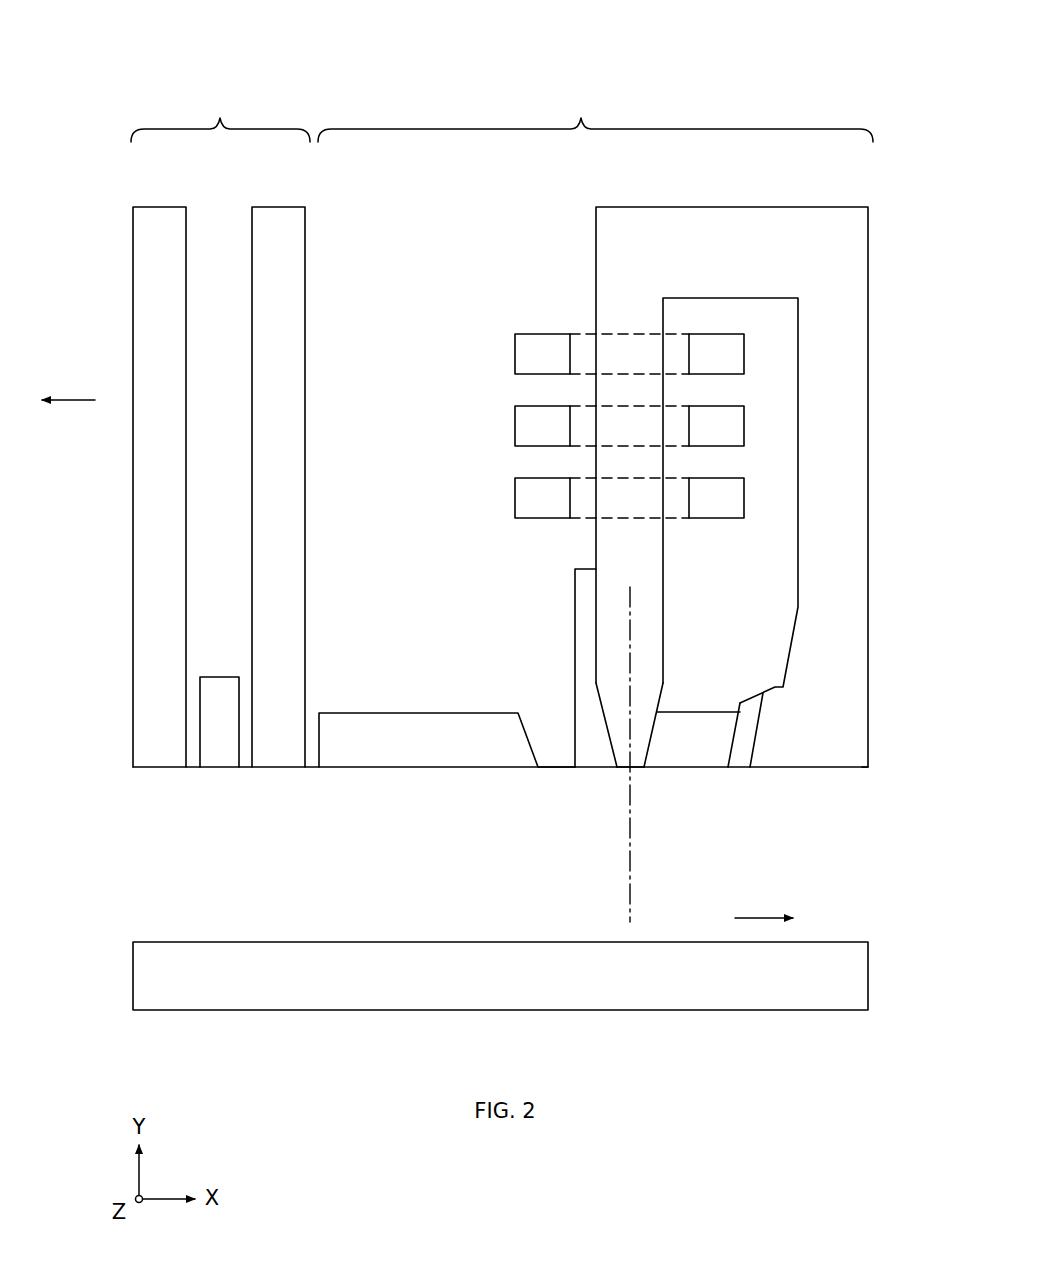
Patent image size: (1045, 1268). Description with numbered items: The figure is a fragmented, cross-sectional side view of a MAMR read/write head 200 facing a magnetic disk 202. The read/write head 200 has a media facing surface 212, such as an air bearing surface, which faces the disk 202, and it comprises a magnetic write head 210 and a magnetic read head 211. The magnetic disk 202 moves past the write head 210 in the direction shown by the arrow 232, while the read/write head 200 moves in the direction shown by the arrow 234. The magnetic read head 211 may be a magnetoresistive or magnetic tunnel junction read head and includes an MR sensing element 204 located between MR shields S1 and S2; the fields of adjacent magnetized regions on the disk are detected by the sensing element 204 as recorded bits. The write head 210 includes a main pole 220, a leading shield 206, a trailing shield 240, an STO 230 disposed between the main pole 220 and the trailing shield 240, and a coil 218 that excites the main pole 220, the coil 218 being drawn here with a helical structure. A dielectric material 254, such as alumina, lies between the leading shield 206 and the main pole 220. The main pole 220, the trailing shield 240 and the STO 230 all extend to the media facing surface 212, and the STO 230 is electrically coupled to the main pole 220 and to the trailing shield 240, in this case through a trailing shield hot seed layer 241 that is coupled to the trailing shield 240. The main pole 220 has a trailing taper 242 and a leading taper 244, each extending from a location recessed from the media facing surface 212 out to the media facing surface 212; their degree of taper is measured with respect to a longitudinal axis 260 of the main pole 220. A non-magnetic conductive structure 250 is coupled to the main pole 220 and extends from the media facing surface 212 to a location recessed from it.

The MAMR read/write head 200 is at (128, 33).
The magnetic disk 202 is at (868, 972).
The MR sensing element 204 is at (210, 770).
The leading shield 206 is at (382, 770).
The magnetic write head 210 is at (595, 115).
The magnetic read head 211 is at (220, 115).
The media facing surface 212 is at (853, 770).
The coil 218 is at (543, 519).
The main pole 220 is at (650, 571).
The STO 230 is at (704, 727).
The arrow 232 is at (753, 917).
The arrow 234 is at (76, 399).
The trailing shield 240 is at (868, 728).
The trailing shield hot seed layer 241 is at (741, 757).
The trailing taper 242 is at (670, 680).
The leading taper 244 is at (596, 688).
The non-magnetic conductive structure 250 is at (595, 753).
The dielectric material 254 is at (551, 752).
The longitudinal axis 260 is at (630, 865).
The MR shield S1 is at (157, 770).
The MR shield S2 is at (259, 770).